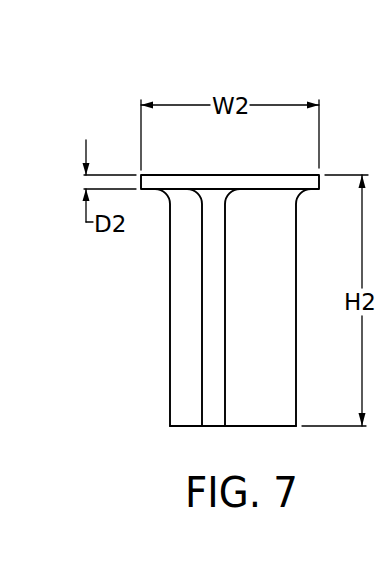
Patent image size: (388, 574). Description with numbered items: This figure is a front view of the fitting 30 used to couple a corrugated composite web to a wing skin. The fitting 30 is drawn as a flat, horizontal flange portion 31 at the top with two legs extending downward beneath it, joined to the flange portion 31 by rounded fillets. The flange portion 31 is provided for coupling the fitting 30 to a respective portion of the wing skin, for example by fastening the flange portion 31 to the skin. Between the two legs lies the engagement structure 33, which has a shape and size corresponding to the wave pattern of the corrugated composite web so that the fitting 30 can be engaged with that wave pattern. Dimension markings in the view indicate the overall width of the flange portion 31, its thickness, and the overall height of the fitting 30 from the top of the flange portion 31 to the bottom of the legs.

The fitting 30 is at (167, 227).
The flange portion 31 is at (230, 152).
The engagement structure 33 is at (169, 307).